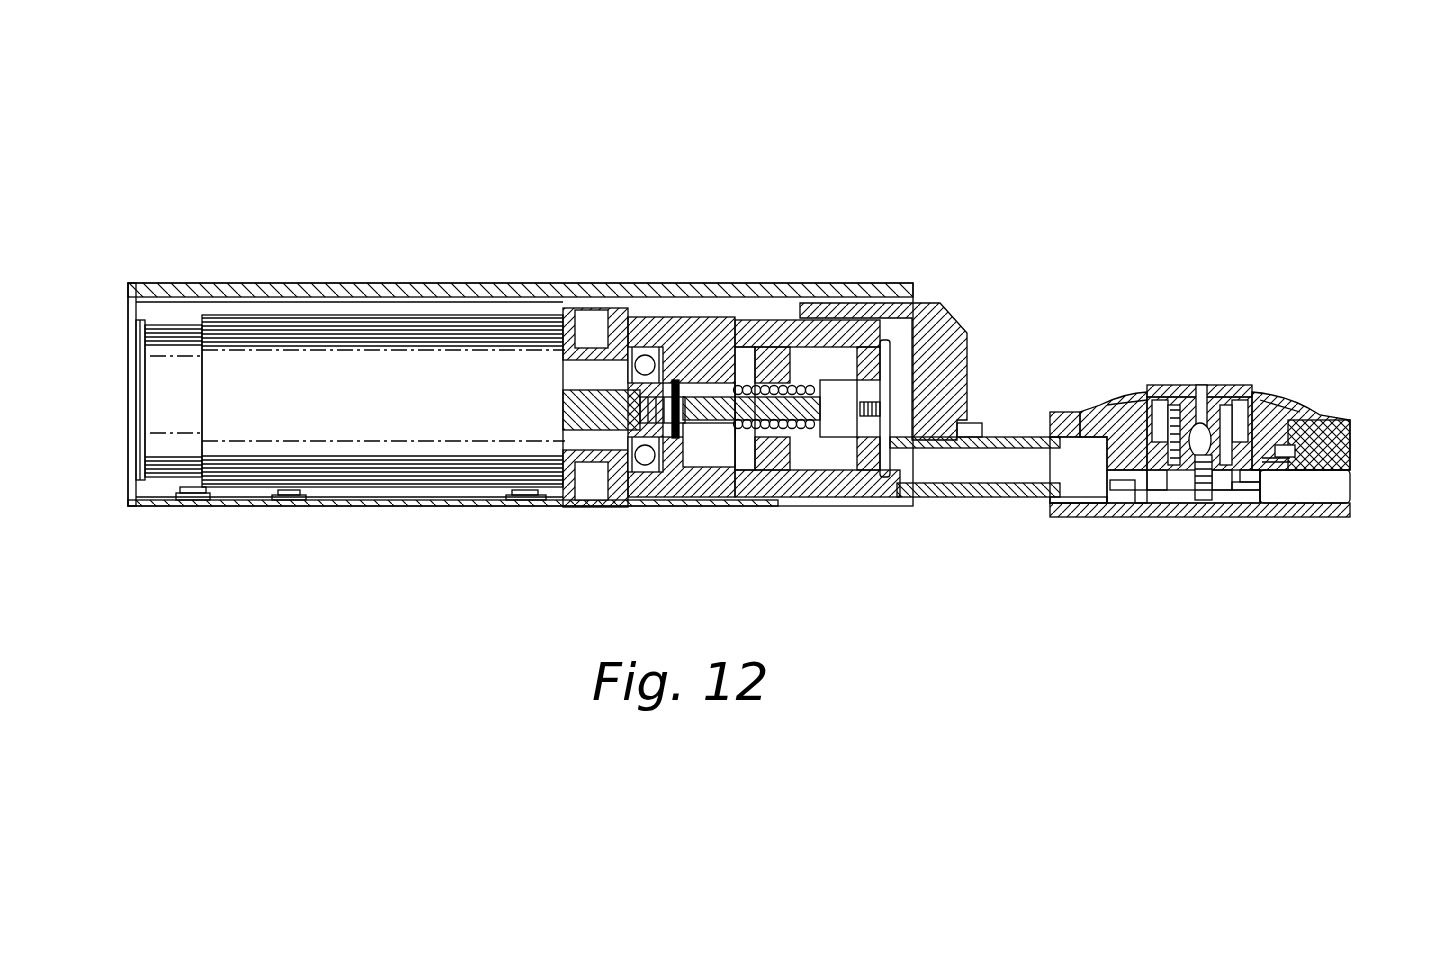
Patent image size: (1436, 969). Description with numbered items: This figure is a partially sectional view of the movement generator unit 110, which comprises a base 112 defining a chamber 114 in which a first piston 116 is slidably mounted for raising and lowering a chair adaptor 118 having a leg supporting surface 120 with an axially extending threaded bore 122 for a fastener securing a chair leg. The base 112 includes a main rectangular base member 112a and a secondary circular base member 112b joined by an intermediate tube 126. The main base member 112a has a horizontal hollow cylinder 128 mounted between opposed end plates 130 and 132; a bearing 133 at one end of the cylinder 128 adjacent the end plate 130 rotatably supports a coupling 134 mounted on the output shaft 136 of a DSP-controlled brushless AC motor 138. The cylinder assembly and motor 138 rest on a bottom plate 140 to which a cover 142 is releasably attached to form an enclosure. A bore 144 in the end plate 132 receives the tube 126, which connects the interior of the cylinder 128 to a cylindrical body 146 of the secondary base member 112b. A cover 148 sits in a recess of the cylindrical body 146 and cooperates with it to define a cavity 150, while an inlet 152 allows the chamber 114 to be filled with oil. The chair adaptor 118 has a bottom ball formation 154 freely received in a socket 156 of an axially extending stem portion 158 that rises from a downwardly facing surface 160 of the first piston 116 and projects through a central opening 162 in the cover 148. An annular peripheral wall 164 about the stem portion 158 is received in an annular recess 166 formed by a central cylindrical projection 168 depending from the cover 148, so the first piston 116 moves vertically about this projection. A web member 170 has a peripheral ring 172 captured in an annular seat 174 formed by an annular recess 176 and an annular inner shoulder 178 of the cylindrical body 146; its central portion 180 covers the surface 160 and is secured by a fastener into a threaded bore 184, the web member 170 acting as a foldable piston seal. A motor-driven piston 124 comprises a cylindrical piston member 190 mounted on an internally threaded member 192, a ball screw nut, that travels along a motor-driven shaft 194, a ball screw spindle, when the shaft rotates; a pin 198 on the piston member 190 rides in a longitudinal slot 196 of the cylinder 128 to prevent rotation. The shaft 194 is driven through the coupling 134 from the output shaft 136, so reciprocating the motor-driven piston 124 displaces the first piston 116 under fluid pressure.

The movement generator unit 110 is at (250, 172).
The base 112 is at (390, 270).
The main rectangular base member 112a is at (426, 509).
The secondary circular base member 112b is at (1302, 398).
The chamber 114 is at (1078, 446).
The first piston 116 is at (1280, 470).
The chair adaptor 118 is at (1231, 380).
The leg supporting surface 120 is at (1167, 410).
The threaded bore 122 is at (1197, 410).
The motor-driven piston 124 is at (718, 444).
The intermediate tube 126 is at (1022, 500).
The horizontal hollow cylinder 128 is at (800, 308).
The end plate 130 is at (613, 315).
The end plate 132 is at (930, 318).
The bearing 133 is at (640, 342).
The coupling 134 is at (633, 475).
The output shaft 136 is at (588, 468).
The DSP-controlled brushless AC motor 138 is at (462, 452).
The bottom plate 140 is at (230, 505).
The cover 142 is at (466, 283).
The bore 144 is at (965, 497).
The cylindrical body 146 is at (1340, 428).
The cover 148 is at (1122, 408).
The cavity 150 is at (1125, 492).
The inlet 152 is at (1330, 488).
The bottom ball formation 154 is at (1212, 492).
The socket 156 is at (1167, 485).
The stem portion 158 is at (1213, 410).
The downwardly facing surface 160 is at (1215, 470).
The central opening 162 is at (1147, 410).
The annular peripheral wall 164 is at (1327, 410).
The annular recess 166 is at (1105, 410).
The central cylindrical projection 168 is at (1072, 500).
The web member 170 is at (1245, 495).
The peripheral ring 172 is at (1285, 480).
The annular seat 174 is at (1305, 450).
The annular recess 176 is at (1280, 460).
The annular inner shoulder 178 is at (1100, 495).
The central portion 180 is at (1153, 488).
The threaded bore 184 is at (1200, 495).
The cylindrical piston member 190 is at (845, 360).
The internally threaded member 192 is at (800, 480).
The motor-driven shaft 194 is at (705, 370).
The longitudinal slot 196 is at (722, 335).
The pin 198 is at (757, 325).